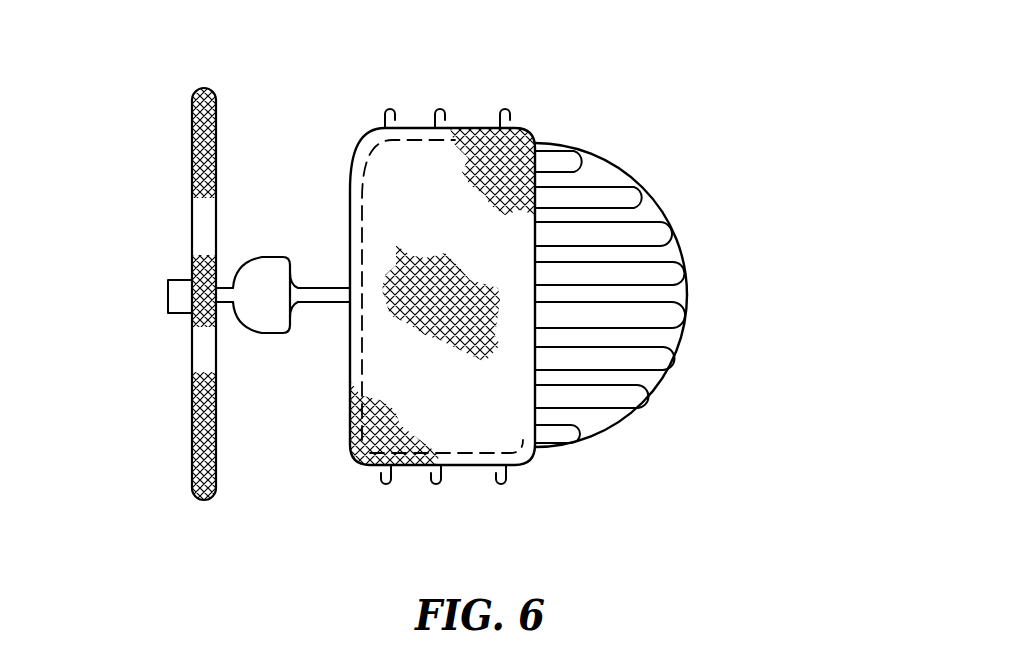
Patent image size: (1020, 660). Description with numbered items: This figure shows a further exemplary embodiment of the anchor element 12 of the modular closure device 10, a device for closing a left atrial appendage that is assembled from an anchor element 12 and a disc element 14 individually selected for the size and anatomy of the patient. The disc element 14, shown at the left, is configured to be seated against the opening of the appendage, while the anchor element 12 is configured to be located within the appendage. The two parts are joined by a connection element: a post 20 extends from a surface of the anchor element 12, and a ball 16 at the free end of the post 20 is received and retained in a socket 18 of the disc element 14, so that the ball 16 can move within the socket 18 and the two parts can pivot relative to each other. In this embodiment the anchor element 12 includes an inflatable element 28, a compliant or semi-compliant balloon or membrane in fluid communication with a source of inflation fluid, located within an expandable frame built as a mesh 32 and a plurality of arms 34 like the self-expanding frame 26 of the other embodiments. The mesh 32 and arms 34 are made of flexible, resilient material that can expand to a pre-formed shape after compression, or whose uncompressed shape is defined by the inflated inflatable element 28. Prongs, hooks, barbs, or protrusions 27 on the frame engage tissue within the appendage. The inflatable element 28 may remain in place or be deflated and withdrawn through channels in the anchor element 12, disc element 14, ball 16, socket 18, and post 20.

The modular closure device 10 is at (572, 294).
The anchor element 12 is at (665, 296).
The disc element 14 is at (193, 160).
The ball 16 is at (296, 305).
The socket 18 is at (257, 273).
The post 20 is at (318, 288).
The self-expanding frame 26 is at (630, 163).
The protrusions 27 is at (445, 478).
The inflatable element 28 is at (615, 432).
The mesh 32 is at (425, 128).
The arms 34 is at (668, 316).